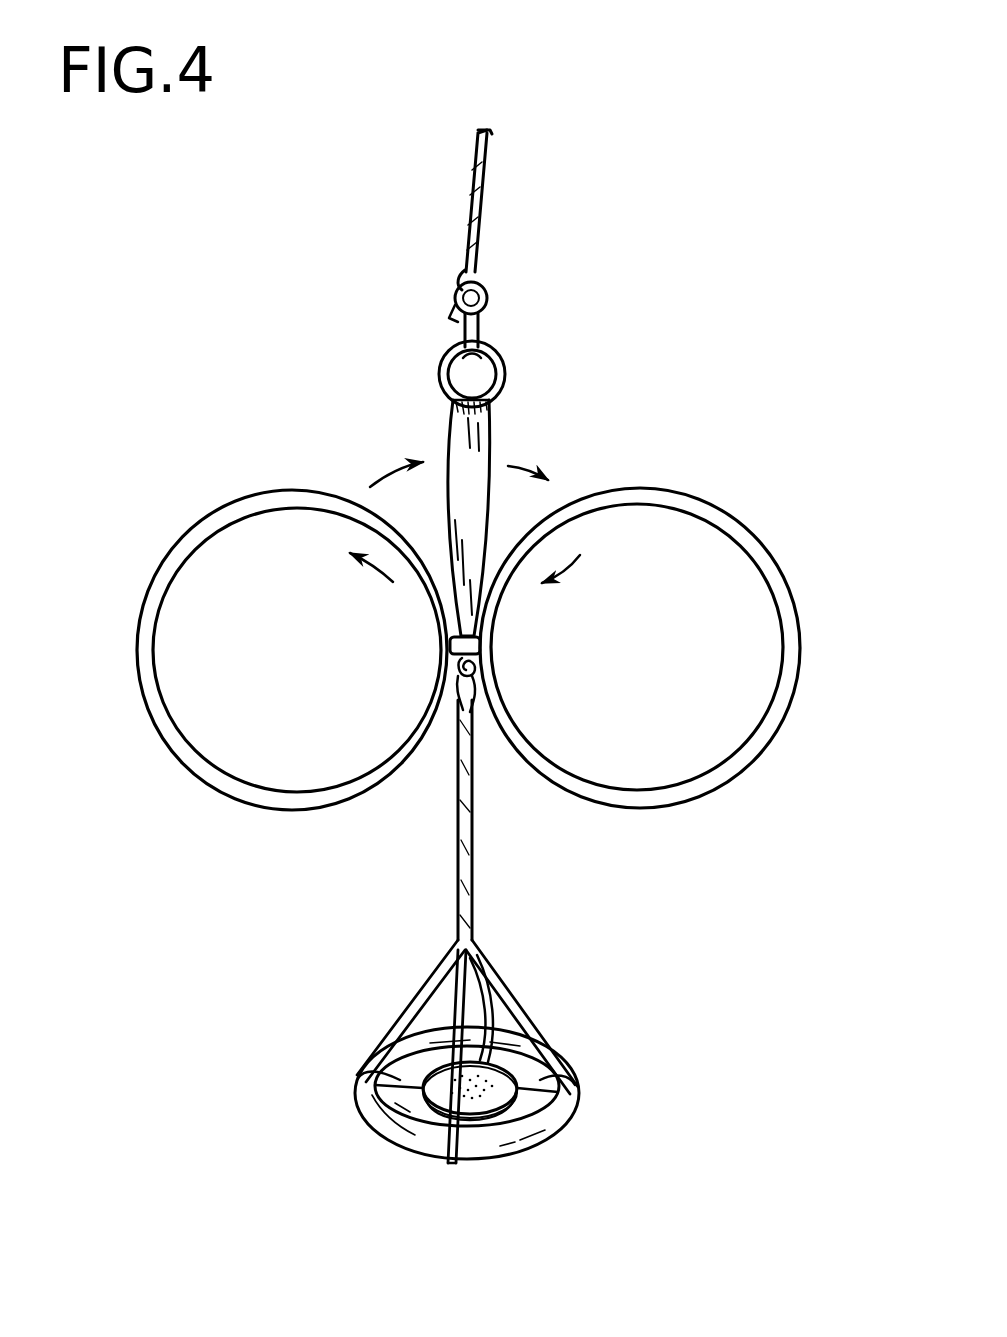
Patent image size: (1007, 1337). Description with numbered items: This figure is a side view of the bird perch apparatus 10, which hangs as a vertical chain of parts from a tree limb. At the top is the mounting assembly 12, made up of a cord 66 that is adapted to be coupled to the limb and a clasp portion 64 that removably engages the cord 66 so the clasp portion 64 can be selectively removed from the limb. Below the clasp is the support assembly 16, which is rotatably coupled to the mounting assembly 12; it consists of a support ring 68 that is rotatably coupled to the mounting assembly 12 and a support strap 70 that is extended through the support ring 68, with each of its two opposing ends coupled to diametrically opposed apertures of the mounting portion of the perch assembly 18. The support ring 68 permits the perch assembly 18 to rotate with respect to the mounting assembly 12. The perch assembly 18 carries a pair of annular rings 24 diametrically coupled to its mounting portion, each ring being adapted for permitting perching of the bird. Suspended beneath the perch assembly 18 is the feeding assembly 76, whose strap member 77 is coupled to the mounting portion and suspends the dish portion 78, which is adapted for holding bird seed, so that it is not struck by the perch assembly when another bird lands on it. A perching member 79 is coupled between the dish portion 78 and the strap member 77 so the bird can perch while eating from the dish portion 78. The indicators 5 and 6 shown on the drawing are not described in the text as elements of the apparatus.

The section line indicator 5 is at (810, 643).
The section line indicator 6 is at (448, 132).
The bird perch apparatus 10 is at (625, 105).
The mounting assembly 12 is at (605, 210).
The support assembly 16 is at (520, 415).
The perch assembly 18 is at (728, 498).
The annular rings 24 is at (173, 546).
The clasp portion 64 is at (490, 288).
The cord 66 is at (486, 148).
The support ring 68 is at (447, 357).
The support strap 70 is at (490, 445).
The feeding assembly 76 is at (290, 1027).
The strap member 77 is at (455, 848).
The dish portion 78 is at (505, 1075).
The perching member 79 is at (372, 1128).